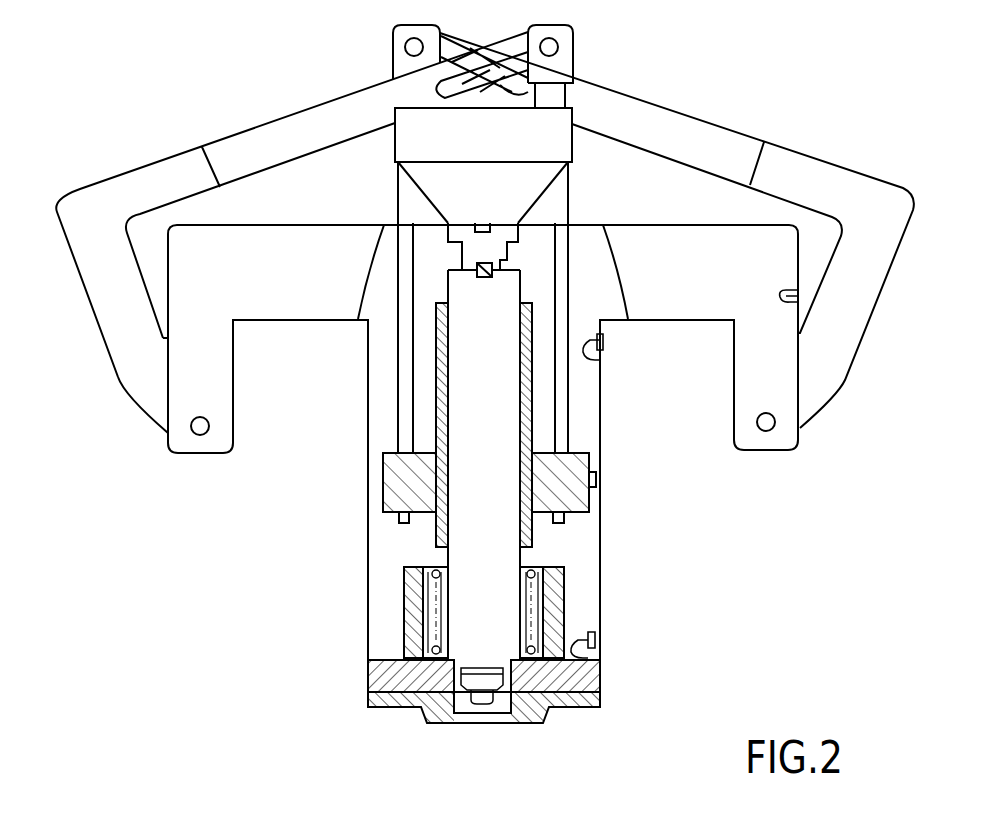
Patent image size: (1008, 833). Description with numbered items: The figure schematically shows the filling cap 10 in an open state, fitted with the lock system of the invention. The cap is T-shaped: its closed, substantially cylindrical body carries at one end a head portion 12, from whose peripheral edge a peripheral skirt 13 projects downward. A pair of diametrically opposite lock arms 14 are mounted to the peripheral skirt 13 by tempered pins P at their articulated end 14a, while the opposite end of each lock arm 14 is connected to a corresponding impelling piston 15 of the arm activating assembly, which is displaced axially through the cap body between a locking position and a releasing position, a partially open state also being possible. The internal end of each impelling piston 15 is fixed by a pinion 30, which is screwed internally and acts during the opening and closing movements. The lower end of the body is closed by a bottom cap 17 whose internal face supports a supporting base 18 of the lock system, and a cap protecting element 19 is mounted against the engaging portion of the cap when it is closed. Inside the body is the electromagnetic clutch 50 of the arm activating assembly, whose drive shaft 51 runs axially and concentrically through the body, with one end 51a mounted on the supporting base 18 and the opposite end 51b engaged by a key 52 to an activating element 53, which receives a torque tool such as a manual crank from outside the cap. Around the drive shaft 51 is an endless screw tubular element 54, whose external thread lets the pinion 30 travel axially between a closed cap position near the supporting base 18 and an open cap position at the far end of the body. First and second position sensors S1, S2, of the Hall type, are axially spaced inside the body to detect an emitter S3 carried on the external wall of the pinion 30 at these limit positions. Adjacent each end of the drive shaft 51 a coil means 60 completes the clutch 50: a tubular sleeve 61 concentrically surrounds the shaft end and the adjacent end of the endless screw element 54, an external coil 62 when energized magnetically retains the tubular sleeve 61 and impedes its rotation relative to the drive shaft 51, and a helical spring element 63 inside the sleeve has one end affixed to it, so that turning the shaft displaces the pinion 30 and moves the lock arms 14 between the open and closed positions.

The filling cap 10 is at (690, 255).
The head portion 12 is at (800, 295).
The peripheral skirt 13 is at (768, 403).
The lock arm 14 is at (258, 147).
The articulated end 14a is at (160, 398).
The impelling piston 15 is at (553, 97).
The bottom cap 17 is at (483, 727).
The supporting base 18 is at (578, 683).
The cap protecting element 19 is at (550, 125).
The pinion 30 is at (565, 470).
The cylinder 50 is at (437, 369).
The drive shaft 51 is at (489, 333).
The end of drive shaft 51a is at (492, 290).
The opposite end of drive shaft 51b is at (496, 630).
The key 52 is at (485, 268).
The activating element 53 is at (495, 240).
The endless screw tubular element 54 is at (446, 425).
The coil means 60 is at (460, 607).
The tubular sleeve 61 is at (424, 612).
The coil 62 is at (413, 643).
The helical spring element 63 is at (531, 580).
The tempered pin P is at (200, 432).
The first position sensor S1 is at (590, 642).
The second position sensor S2 is at (596, 346).
The emitter S3 is at (597, 480).